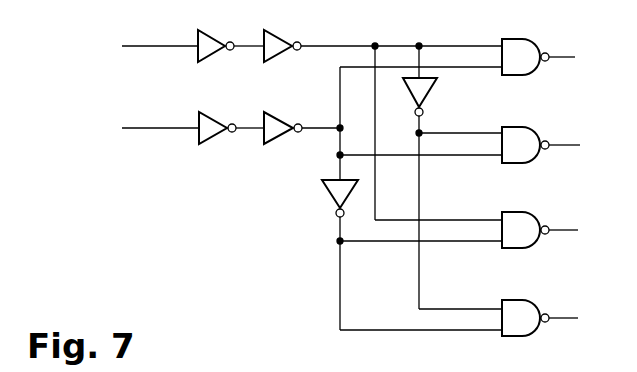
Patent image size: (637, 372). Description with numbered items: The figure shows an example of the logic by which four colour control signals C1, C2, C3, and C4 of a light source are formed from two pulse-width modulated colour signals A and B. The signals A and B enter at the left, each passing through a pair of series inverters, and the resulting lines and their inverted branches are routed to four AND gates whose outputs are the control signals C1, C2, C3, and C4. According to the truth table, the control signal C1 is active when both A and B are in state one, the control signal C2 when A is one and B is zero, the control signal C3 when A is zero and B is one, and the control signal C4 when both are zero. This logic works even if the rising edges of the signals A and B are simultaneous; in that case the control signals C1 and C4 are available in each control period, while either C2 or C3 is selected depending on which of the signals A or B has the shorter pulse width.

The pulse-width modulated colour control signal A is at (150, 46).
The pulse-width modulated colour control signal B is at (151, 128).
The colour control signal C1 is at (555, 57).
The colour control signal C2 is at (558, 145).
The colour control signal C3 is at (559, 230).
The colour control signal C4 is at (558, 318).